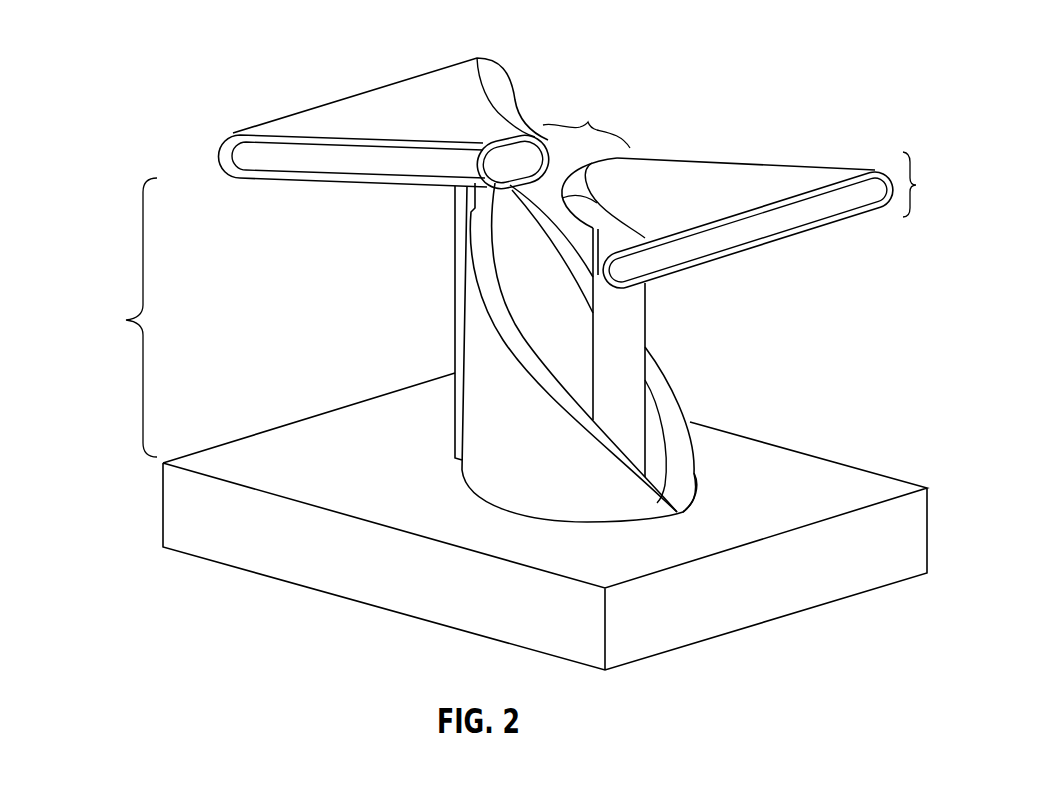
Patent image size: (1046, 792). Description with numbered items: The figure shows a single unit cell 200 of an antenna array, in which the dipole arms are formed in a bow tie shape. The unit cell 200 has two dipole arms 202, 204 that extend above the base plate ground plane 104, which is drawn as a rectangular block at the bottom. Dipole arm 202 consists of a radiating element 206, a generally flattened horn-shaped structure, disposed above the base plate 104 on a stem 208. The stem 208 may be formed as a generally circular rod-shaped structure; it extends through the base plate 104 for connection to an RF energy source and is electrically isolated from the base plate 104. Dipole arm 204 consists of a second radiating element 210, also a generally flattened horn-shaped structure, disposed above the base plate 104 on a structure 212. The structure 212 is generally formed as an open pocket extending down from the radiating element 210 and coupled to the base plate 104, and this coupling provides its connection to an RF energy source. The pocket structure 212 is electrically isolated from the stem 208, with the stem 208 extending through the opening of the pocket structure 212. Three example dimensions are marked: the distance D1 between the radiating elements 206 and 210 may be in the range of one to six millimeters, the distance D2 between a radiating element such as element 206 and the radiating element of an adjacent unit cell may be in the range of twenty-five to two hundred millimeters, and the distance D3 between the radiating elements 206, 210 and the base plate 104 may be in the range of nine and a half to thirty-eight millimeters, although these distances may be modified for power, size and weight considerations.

The base plate ground plane 104 is at (720, 615).
The unit cell 200 is at (499, 264).
The dipole arm 202 is at (773, 100).
The dipole arm 204 is at (512, 57).
The radiating element 206 is at (787, 183).
The stem 208 is at (620, 305).
The radiating element 210 is at (343, 118).
The pocket structure 212 is at (490, 345).
The distance between radiating elements D1 is at (586, 119).
The distance to adjacent unit cell radiating element D2 is at (927, 184).
The distance between radiating elements and base plate D3 is at (120, 317).